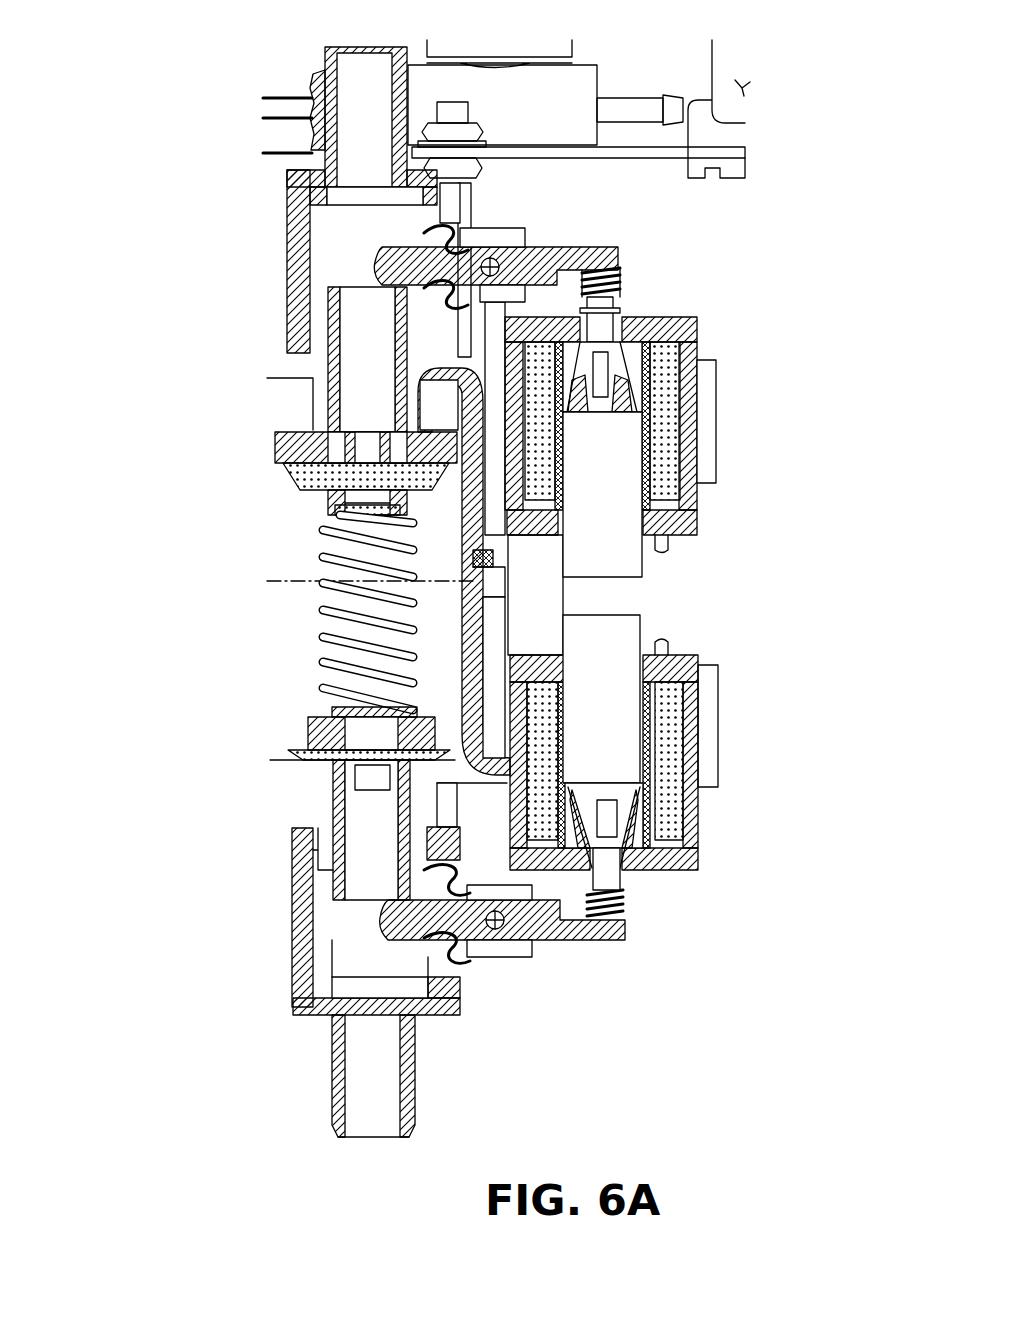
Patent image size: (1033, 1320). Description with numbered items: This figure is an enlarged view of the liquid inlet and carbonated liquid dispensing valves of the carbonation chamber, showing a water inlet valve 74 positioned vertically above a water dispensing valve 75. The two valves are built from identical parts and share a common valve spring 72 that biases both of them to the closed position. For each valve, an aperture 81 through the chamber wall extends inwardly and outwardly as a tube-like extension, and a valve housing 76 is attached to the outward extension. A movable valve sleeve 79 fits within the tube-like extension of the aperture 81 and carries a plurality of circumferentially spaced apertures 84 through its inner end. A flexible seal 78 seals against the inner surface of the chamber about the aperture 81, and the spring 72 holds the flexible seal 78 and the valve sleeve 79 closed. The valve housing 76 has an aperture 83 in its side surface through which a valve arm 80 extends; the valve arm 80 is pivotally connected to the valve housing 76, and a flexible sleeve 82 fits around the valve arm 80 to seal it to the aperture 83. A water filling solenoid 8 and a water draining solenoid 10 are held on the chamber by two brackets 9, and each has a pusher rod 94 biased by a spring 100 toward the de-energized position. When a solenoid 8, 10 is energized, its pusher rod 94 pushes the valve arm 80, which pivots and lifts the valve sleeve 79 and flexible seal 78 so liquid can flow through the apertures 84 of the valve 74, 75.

The water inlet valve 74 is at (214, 172).
The water dispensing valve 75 is at (186, 813).
The valve housing 76 is at (297, 262).
The aperture 81 is at (338, 371).
The valve sleeve 79 is at (313, 403).
The flexible seal 78 is at (325, 498).
The valve spring 72 is at (330, 612).
The apertures 84 is at (368, 775).
The flexible sleeve 82 is at (425, 953).
The aperture 83 is at (460, 990).
The valve arm 80 is at (567, 927).
The spring 100 is at (622, 283).
The water filling solenoid 8 is at (655, 372).
The brackets 9 is at (700, 408).
The water draining solenoid 10 is at (660, 710).
The pusher rod 94 is at (607, 880).